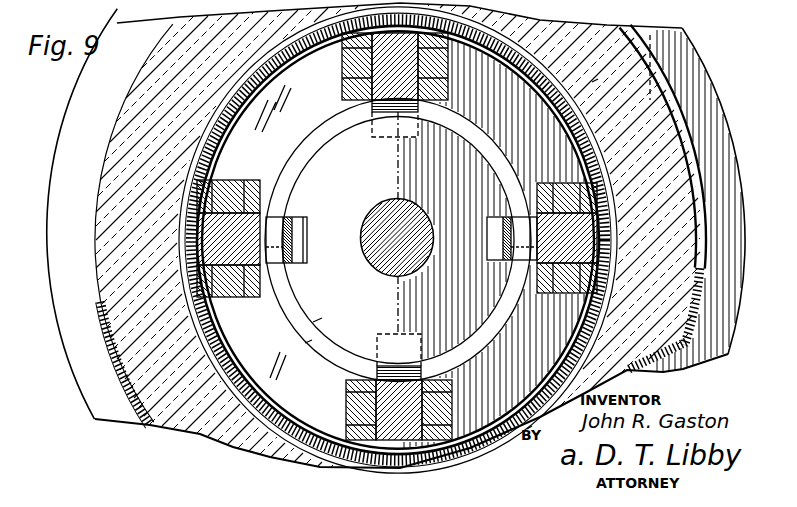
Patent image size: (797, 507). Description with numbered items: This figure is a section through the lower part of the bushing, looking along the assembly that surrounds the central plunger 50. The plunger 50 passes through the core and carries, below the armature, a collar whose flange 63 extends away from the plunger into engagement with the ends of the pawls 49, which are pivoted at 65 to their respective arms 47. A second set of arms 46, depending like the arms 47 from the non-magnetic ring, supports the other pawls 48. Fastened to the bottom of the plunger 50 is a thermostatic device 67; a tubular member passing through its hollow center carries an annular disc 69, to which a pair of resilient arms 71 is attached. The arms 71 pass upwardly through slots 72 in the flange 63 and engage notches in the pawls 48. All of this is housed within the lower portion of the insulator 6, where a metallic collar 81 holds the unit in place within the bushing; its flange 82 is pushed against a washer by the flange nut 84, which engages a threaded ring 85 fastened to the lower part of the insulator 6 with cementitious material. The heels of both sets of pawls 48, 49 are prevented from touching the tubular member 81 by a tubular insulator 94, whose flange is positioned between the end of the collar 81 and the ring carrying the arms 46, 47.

The insulator 6 is at (108, 207).
The arms 46 is at (245, 178).
The arms 47 is at (341, 78).
The pawls 48 is at (695, 165).
The pawls 49 is at (383, 112).
The plunger 50 is at (371, 208).
The flange 63 is at (313, 322).
The pivot 65 is at (292, 223).
The thermostatic device 67 is at (532, 426).
The annular disc 69 is at (305, 343).
The arms 71 is at (300, 247).
The slots 72 is at (310, 198).
The metallic collar 81 is at (204, 163).
The flange 82 is at (637, 22).
The flange nut 84 is at (66, 128).
The threaded ring 85 is at (99, 168).
The tubular insulator 94 is at (592, 82).